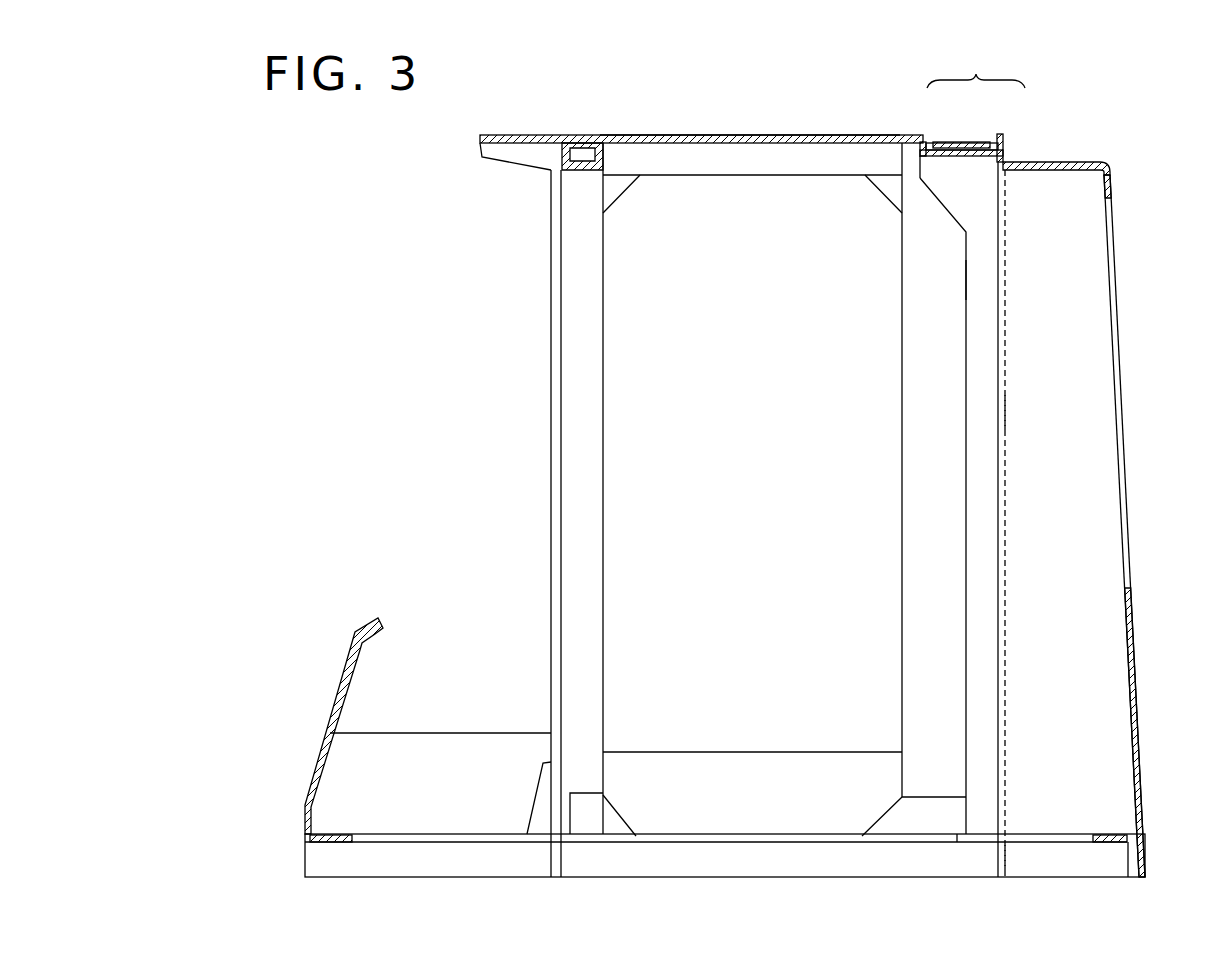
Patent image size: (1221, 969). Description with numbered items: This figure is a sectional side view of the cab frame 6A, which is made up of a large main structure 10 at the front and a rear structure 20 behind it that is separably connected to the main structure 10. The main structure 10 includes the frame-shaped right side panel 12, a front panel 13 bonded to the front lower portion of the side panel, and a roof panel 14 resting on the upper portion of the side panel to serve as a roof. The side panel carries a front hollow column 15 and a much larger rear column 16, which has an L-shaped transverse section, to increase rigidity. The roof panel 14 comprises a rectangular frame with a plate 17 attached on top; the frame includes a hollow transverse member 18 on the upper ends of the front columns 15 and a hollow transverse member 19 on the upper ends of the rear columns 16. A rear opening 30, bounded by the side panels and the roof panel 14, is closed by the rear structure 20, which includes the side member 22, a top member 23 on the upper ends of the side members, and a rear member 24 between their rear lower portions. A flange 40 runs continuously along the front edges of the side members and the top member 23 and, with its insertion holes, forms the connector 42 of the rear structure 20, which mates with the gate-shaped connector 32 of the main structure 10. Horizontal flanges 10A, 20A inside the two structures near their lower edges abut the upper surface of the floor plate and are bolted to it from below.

The cab frame 6A is at (976, 66).
The main structure 10 is at (905, 133).
The horizontal flange 10A is at (703, 838).
The right side panel 12 is at (735, 768).
The front panel 13 is at (322, 752).
The roof panel 14 is at (718, 157).
The front column 15 is at (600, 468).
The rear column 16 is at (913, 458).
The plate 17 is at (803, 135).
The hollow transverse member 18 is at (580, 162).
The hollow transverse member 19 is at (955, 160).
The rear structure 20 is at (1072, 162).
The horizontal flange 20A is at (1048, 838).
The left side member 22 is at (1093, 423).
The top member 23 is at (1058, 172).
The rear member 24 is at (1135, 695).
The rear opening 30 is at (977, 380).
The connector 32 is at (1000, 413).
The flange 40 is at (1003, 153).
The connector 42 is at (998, 283).